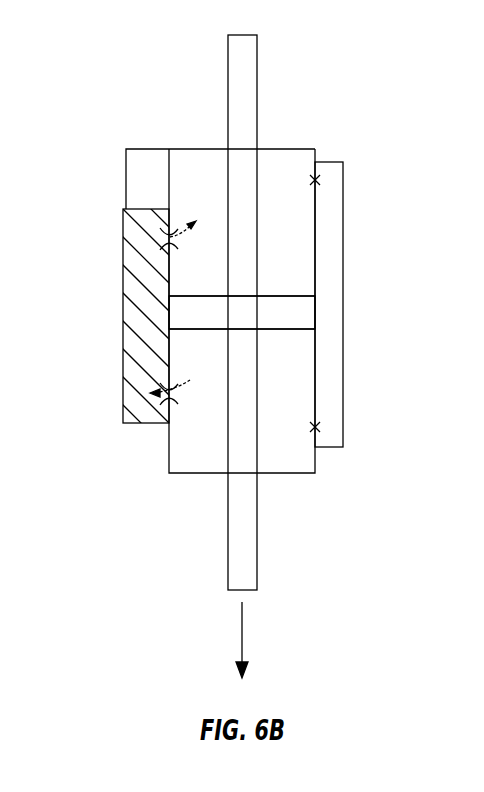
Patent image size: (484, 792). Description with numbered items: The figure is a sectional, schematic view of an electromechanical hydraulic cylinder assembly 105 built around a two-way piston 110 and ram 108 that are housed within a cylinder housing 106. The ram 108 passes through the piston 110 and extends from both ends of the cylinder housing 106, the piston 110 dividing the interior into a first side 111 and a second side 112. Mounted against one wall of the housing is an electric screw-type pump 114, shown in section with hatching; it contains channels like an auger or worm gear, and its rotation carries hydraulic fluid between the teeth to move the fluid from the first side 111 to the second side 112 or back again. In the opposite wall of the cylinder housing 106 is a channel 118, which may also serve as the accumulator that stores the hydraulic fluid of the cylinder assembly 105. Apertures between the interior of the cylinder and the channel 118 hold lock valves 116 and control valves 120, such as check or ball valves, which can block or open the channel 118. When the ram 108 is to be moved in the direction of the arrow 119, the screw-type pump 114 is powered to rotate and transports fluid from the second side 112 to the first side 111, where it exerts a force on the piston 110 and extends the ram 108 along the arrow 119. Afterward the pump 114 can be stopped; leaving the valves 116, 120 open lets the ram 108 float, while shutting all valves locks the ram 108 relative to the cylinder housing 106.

The electromechanical hydraulic cylinder assembly 105 is at (128, 78).
The cylinder housing 106 is at (343, 322).
The ram 108 is at (257, 89).
The piston 110 is at (288, 296).
The first side of the piston 111 is at (203, 295).
The second side of the piston 112 is at (203, 330).
The screw-type pump 114 is at (123, 320).
The lock valves 116 is at (156, 395).
The channel 118 is at (332, 235).
The arrow 119 is at (242, 631).
The control valves 120 is at (168, 226).